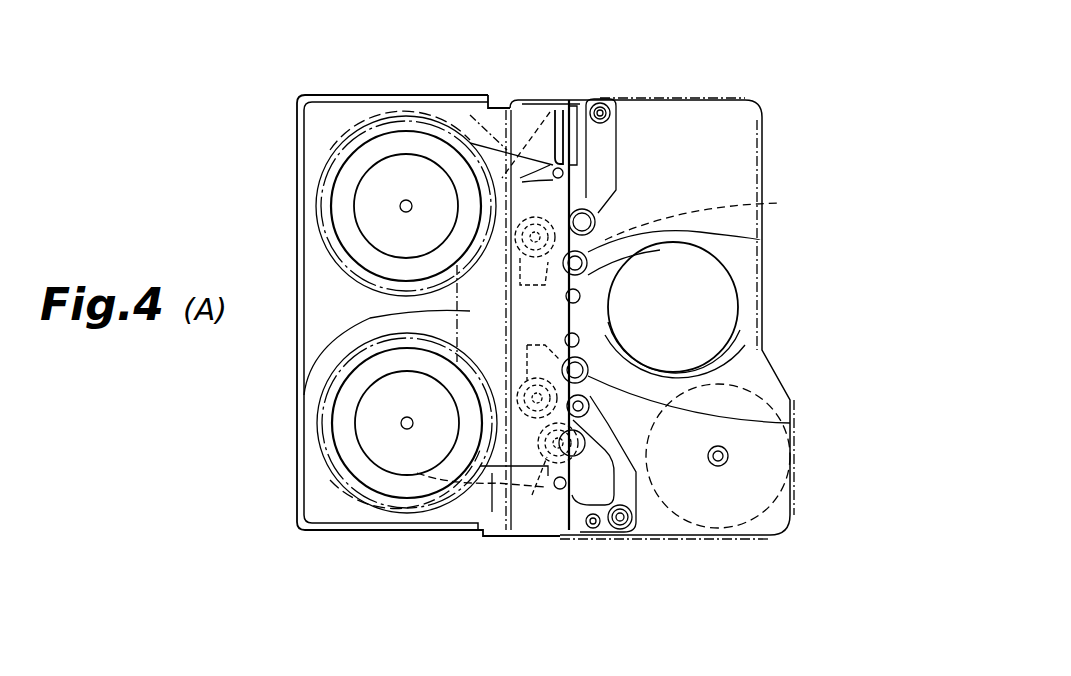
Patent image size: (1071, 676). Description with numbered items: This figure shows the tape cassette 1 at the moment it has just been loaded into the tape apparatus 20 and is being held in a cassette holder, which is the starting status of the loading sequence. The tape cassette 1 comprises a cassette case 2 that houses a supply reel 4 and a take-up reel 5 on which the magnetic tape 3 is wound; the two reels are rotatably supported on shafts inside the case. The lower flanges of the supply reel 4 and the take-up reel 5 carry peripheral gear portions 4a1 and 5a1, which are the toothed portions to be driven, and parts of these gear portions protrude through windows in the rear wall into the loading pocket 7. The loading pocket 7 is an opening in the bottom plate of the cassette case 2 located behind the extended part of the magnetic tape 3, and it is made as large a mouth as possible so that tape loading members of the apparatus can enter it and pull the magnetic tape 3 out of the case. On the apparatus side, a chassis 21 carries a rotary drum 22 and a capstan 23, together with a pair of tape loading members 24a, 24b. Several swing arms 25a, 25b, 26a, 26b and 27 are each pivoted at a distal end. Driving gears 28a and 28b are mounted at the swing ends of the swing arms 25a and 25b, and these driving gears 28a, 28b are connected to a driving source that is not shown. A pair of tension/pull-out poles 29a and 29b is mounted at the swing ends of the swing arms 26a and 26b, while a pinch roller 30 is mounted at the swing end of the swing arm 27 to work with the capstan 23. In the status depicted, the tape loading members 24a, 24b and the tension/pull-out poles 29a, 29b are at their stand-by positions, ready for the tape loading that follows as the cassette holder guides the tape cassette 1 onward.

The tape cassette 1 is at (297, 165).
The cassette case 2 is at (297, 368).
The magnetic tape 3 is at (480, 147).
The supply reel 4 is at (407, 123).
The gear portion 4a1 is at (346, 136).
The take-up reel 5 is at (327, 432).
The gear portion 5a1 is at (342, 500).
The loading pocket 7 is at (307, 385).
The tape apparatus 20 is at (380, 42).
The chassis 21 is at (768, 135).
The rotary drum 22 is at (713, 323).
The capstan 23 is at (730, 458).
The tape loading member 24a is at (740, 243).
The tape loading member 24b is at (790, 423).
The swing arm 25a is at (542, 125).
The swing arm 25b is at (530, 457).
The swing arm 26a is at (603, 147).
The swing arm 26b is at (587, 523).
The swing arm 27 is at (627, 493).
The driving gear 28a is at (745, 207).
The driving gear 28b is at (522, 413).
The tension/pull-out pole 29a is at (592, 188).
The tension/pull-out pole 29b is at (588, 410).
The pinch roller 30 is at (547, 457).